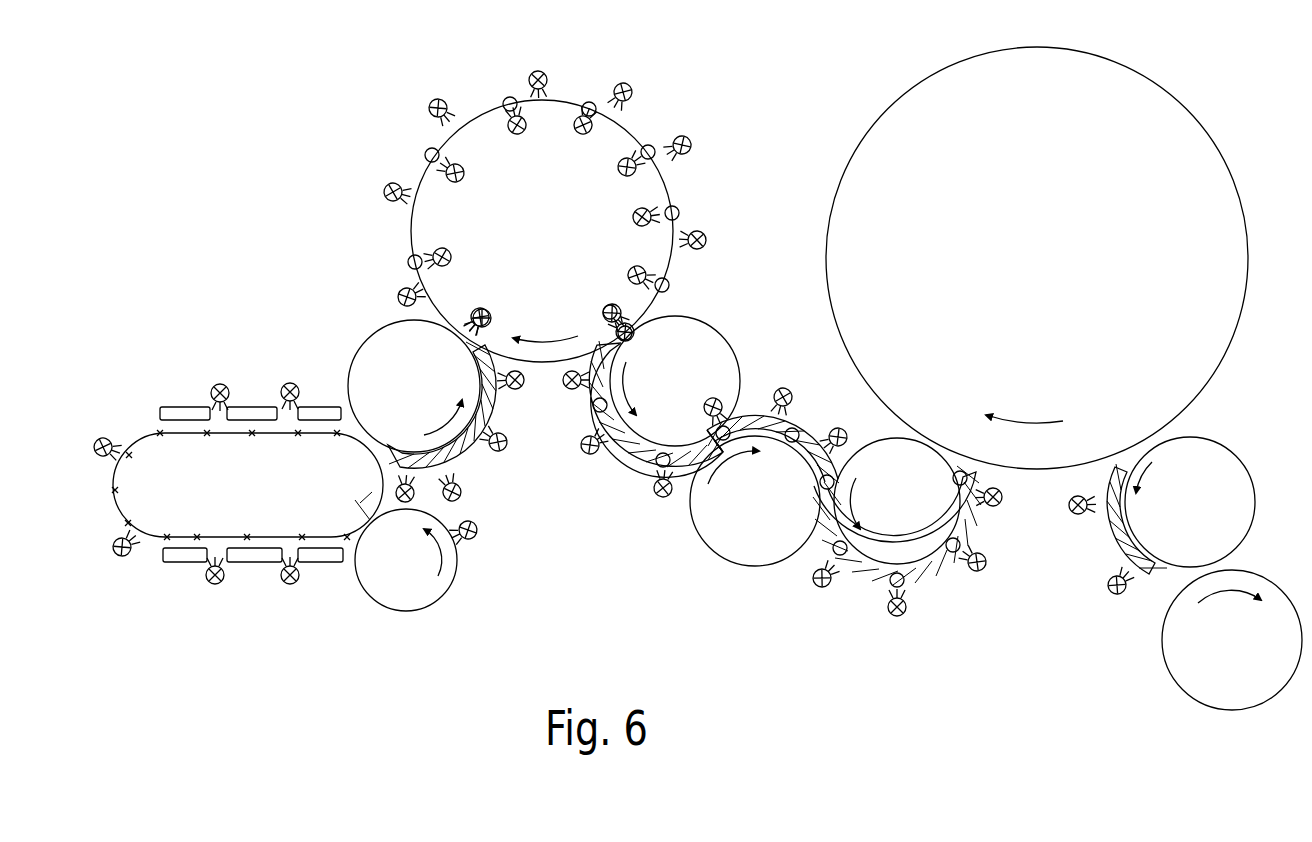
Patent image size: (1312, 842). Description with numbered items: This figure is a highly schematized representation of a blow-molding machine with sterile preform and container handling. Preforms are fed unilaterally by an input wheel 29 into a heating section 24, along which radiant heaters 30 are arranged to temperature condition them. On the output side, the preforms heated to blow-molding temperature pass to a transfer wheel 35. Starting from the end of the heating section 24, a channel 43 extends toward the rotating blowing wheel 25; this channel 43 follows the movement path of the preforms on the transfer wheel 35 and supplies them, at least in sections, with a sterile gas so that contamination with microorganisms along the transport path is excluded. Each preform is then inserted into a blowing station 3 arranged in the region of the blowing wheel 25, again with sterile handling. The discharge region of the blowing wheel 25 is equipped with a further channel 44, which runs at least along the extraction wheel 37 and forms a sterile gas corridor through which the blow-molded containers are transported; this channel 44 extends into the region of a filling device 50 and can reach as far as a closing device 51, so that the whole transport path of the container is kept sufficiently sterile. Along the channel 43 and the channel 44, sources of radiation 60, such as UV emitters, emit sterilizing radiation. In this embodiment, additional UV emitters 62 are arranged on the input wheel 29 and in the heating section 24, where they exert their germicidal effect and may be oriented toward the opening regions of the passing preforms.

The blowing station 3 is at (673, 207).
The heating section 24 is at (138, 404).
The blowing wheel 25 is at (608, 140).
The input wheel 29 is at (422, 602).
The radiant heaters 30 is at (182, 563).
The transfer wheel 35 is at (375, 353).
The extraction wheel 37 is at (705, 347).
The channel 43 is at (467, 460).
The channel 44 is at (612, 457).
The filling device 50 is at (905, 100).
The closing device 51 is at (1165, 637).
The sources of radiation 60 is at (502, 387).
The UV emitters 62 is at (280, 563).